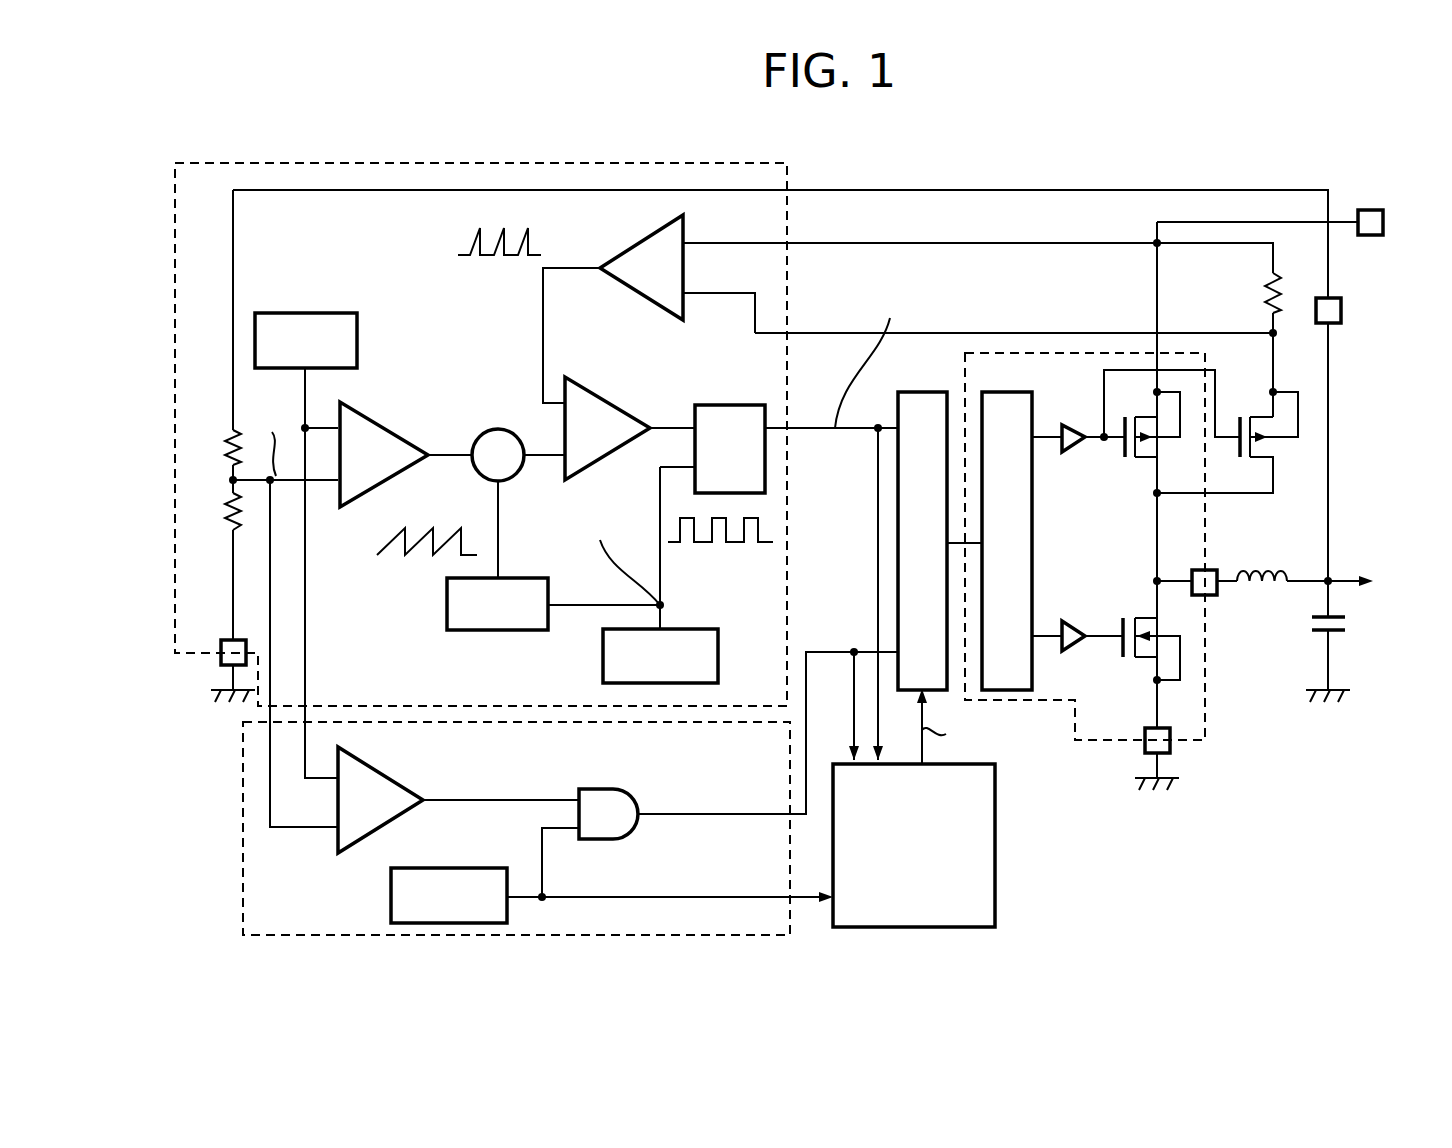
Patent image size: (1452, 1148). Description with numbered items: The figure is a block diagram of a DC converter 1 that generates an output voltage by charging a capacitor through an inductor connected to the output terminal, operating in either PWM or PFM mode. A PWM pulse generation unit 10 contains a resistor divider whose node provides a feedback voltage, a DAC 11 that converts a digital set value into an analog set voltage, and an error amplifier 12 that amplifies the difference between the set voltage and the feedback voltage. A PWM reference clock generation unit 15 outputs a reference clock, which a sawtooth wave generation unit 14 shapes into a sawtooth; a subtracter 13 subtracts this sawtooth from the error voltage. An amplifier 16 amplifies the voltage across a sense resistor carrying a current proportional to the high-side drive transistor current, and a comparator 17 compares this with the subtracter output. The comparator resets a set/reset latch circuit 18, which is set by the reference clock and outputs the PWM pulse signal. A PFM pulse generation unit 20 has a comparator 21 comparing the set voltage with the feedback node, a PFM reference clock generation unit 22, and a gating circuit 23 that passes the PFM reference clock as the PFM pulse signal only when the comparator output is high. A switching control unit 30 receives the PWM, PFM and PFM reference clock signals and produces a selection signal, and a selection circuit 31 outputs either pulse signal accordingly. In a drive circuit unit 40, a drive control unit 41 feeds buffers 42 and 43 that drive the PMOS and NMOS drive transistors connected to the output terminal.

The DC converter 1 is at (954, 173).
The PWM pulse generation unit 10 is at (789, 288).
The DAC 11 is at (358, 340).
The error amplifier 12 is at (372, 413).
The subtracter 13 is at (499, 428).
The sawtooth wave generation unit 14 is at (445, 604).
The PWM reference clock generation unit 15 is at (602, 660).
The amplifier 16 is at (630, 250).
The comparator 17 is at (614, 397).
The set/reset latch circuit 18 is at (720, 405).
The PFM pulse generation unit 20 is at (243, 788).
The comparator 21 is at (385, 770).
The PFM reference clock generation unit 22 is at (472, 868).
The gating circuit 23 is at (587, 787).
The switching control unit 30 is at (998, 856).
The selection circuit 31 is at (924, 392).
The drive circuit unit 40 is at (1207, 670).
The drive control unit 41 is at (1033, 532).
The buffer 42 is at (1076, 425).
The buffer 43 is at (1078, 622).